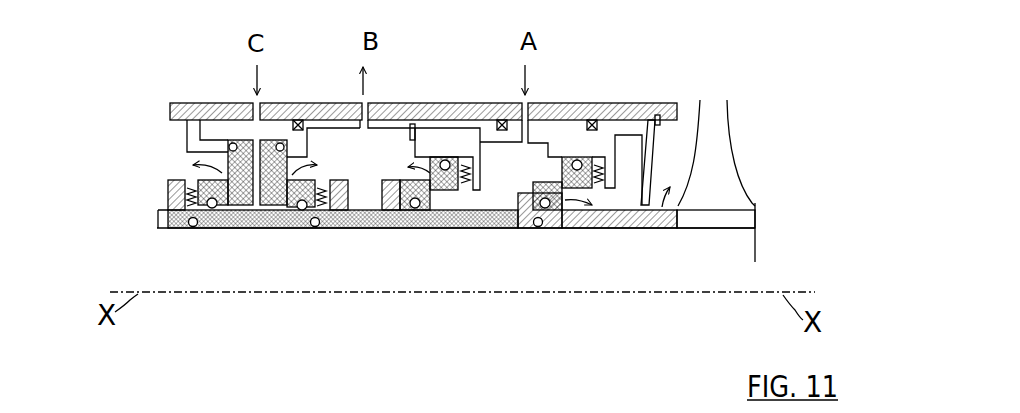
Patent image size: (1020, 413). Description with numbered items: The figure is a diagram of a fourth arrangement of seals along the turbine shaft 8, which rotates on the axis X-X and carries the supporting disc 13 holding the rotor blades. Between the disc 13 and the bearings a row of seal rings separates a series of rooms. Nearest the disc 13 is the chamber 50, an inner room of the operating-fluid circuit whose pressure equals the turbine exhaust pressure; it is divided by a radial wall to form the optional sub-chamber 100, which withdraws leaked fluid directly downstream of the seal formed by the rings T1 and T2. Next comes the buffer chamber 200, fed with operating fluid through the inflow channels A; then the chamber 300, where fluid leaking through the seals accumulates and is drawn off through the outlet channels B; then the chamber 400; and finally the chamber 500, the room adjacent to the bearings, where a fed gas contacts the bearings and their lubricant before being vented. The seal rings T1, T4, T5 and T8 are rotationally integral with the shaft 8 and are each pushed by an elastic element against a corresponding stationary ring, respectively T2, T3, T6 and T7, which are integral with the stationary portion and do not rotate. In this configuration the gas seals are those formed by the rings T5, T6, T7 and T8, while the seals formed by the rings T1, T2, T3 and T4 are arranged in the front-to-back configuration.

The shaft 8 is at (748, 237).
The supporting disc 13 is at (733, 212).
The chamber 50 is at (681, 143).
The sub-chamber 100 is at (628, 152).
The buffer chamber 200 is at (494, 160).
The chamber 300 is at (343, 142).
The chamber 400 is at (264, 214).
The chamber 500 is at (160, 162).
The seal ring T1 is at (610, 202).
The seal ring T2 is at (558, 207).
The seal ring T3 is at (468, 190).
The seal ring T4 is at (445, 212).
The seal ring T5 is at (330, 213).
The seal ring T6 is at (278, 207).
The seal ring T7 is at (242, 208).
The seal ring T8 is at (207, 208).